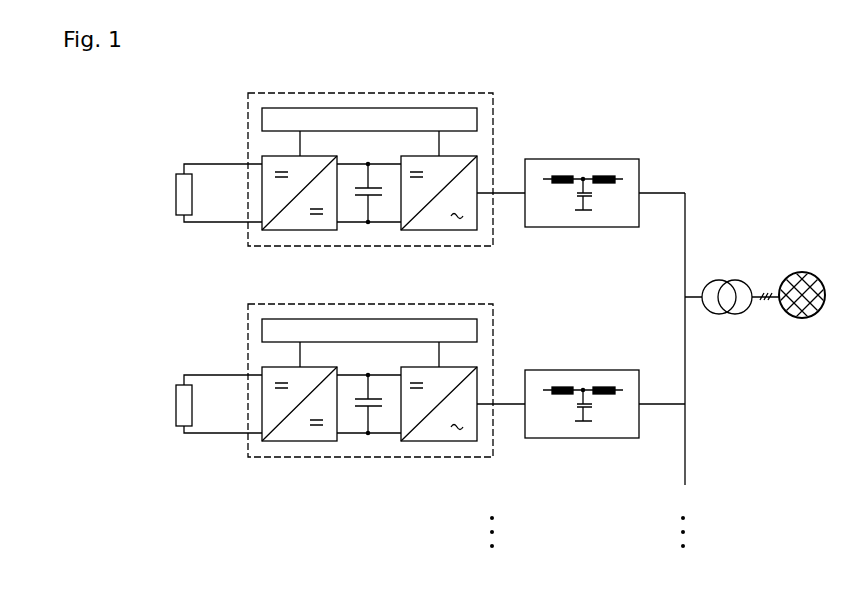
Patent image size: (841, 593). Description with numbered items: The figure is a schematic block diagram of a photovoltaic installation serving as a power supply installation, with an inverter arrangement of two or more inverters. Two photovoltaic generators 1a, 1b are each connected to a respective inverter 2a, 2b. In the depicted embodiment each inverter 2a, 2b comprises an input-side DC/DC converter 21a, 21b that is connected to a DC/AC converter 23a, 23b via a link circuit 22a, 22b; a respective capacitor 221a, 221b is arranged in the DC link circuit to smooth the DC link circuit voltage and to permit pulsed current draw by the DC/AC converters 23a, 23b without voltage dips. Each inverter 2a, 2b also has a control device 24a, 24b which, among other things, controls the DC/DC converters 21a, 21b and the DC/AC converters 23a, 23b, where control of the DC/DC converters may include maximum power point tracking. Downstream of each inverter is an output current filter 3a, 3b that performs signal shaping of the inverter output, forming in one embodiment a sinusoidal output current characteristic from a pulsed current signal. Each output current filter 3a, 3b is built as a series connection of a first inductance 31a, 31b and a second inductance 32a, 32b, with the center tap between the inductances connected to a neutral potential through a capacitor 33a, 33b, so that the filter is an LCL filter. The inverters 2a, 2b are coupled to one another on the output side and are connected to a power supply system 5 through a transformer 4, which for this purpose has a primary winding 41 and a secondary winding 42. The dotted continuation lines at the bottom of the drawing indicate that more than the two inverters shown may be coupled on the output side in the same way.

The photovoltaic generator 1a is at (181, 172).
The photovoltaic generator 1b is at (181, 383).
The inverter 2a is at (248, 106).
The inverter 2b is at (248, 317).
The DC/DC converter 21a is at (296, 232).
The DC/DC converter 21b is at (296, 443).
The link circuit 22a is at (364, 223).
The link circuit 22b is at (365, 434).
The capacitor 221a is at (373, 198).
The capacitor 221b is at (373, 409).
The DC/AC converter 23a is at (458, 232).
The DC/AC converter 23b is at (458, 443).
The control device 24a is at (479, 114).
The control device 24b is at (479, 325).
The output current filter 3a is at (578, 194).
The output current filter 3b is at (578, 405).
The first inductance 31a is at (560, 184).
The first inductance 31b is at (560, 395).
The second inductance 32a is at (608, 184).
The second inductance 32b is at (608, 395).
The capacitor 33a is at (578, 198).
The capacitor 33b is at (578, 409).
The transformer 4 is at (732, 274).
The primary winding 41 is at (715, 314).
The secondary winding 42 is at (738, 314).
The power supply system 5 is at (801, 272).